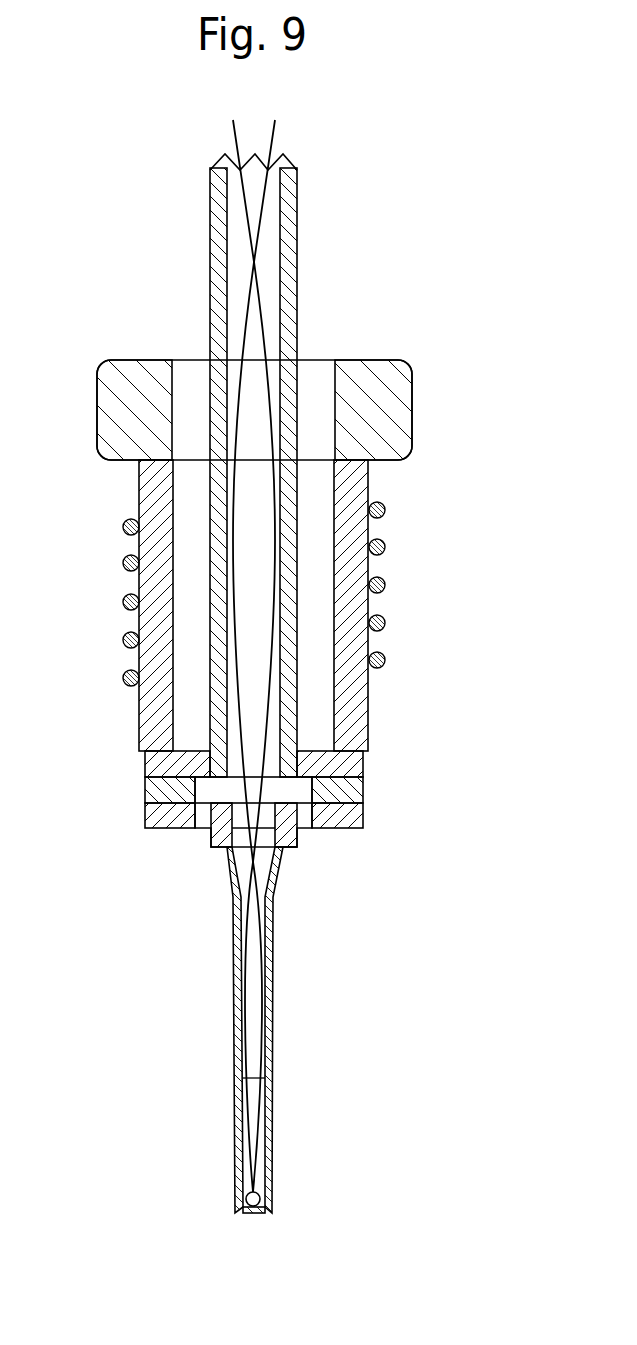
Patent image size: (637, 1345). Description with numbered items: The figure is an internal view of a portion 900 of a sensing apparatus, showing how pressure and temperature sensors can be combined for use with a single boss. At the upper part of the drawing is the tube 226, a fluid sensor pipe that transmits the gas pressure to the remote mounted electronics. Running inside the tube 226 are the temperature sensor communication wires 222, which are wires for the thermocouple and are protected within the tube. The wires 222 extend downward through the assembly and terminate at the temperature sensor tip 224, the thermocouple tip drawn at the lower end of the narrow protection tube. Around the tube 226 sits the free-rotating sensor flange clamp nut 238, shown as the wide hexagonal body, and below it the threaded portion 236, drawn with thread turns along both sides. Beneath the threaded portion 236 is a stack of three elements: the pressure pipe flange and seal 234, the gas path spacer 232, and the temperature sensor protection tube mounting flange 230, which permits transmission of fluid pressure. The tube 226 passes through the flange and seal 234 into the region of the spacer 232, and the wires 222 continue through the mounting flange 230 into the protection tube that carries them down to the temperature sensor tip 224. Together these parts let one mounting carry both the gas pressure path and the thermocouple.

The portion of a sensing apparatus 900 is at (130, 163).
The tube 226 is at (208, 248).
The free-rotating sensor flange clamp nut 238 is at (412, 406).
The threaded portion 236 is at (124, 565).
The pressure pipe flange and seal 234 is at (145, 763).
The gas path spacer 232 is at (145, 792).
The temperature sensor protection tube mounting flange 230 is at (145, 817).
The temperature sensor communication wires 222 is at (263, 927).
The temperature sensor tip 224 is at (253, 1205).